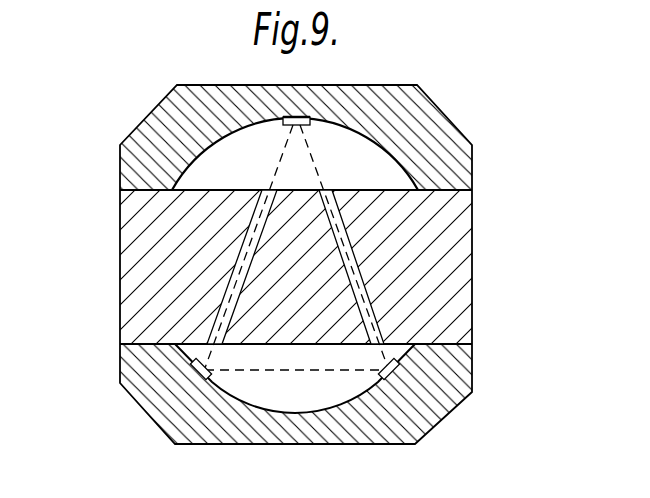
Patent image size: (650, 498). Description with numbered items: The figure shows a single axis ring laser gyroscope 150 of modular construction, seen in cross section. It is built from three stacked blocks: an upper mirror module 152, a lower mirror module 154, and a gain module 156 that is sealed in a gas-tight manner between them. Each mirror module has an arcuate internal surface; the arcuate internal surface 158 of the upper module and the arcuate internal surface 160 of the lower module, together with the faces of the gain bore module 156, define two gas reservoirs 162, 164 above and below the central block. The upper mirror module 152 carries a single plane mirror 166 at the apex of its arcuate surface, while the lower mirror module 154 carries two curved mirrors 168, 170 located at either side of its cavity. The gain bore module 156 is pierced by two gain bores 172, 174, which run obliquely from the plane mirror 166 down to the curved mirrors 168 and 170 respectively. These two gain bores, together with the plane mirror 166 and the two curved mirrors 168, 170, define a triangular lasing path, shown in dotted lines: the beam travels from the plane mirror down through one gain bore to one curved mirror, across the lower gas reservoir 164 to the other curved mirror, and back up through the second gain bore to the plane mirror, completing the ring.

The single axis ring laser gyroscope 150 is at (115, 90).
The mirror module 152 is at (428, 130).
The mirror module 154 is at (165, 400).
The gain module 156 is at (150, 240).
The arcuate internal surface 158 is at (198, 175).
The arcuate internal surface 160 is at (258, 392).
The gas reservoir 162 is at (370, 175).
The gas reservoir 164 is at (334, 400).
The plane mirror 166 is at (296, 116).
The curved mirror 168 is at (194, 368).
The curved mirror 170 is at (400, 368).
The gain bore 172 is at (230, 278).
The gain bore 174 is at (355, 268).